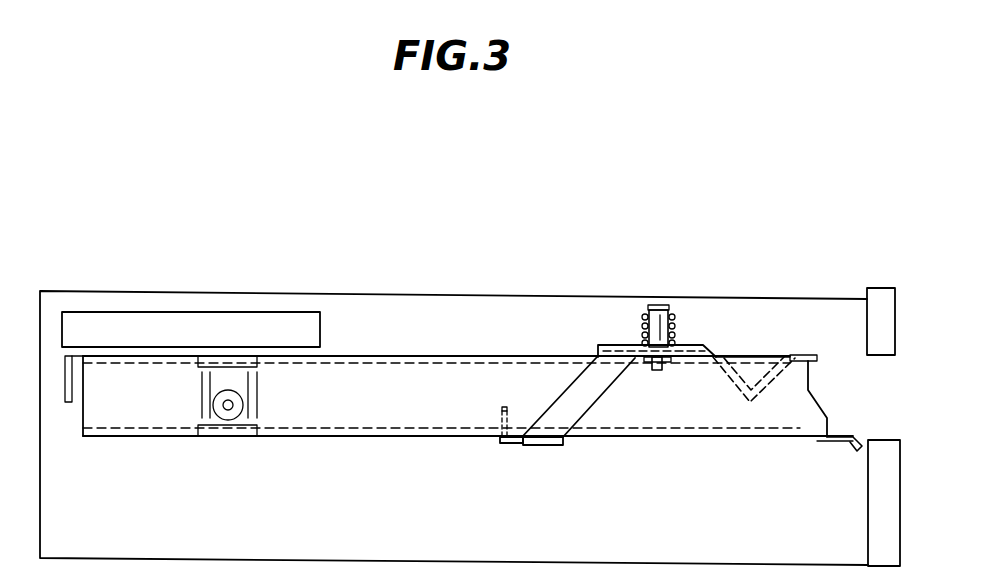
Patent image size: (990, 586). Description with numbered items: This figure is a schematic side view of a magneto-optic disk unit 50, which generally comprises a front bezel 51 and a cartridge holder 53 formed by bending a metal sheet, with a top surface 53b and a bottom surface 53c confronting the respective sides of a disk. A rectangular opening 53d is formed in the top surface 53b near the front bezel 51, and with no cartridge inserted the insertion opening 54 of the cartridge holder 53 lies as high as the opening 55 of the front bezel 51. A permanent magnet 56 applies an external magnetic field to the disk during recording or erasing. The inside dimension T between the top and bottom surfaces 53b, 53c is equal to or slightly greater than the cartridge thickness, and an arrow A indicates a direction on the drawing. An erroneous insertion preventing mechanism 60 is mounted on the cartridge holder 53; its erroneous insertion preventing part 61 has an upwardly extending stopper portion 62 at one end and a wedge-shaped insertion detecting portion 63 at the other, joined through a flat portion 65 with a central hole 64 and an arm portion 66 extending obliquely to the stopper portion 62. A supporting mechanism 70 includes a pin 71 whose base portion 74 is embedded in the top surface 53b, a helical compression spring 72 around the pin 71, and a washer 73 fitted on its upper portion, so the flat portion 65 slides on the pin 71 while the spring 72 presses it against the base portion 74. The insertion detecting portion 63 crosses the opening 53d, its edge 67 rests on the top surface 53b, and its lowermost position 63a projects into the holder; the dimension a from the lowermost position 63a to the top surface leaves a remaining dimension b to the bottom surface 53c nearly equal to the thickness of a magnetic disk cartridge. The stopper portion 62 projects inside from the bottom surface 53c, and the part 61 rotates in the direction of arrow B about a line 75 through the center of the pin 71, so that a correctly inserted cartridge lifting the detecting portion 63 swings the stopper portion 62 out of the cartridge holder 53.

The magneto-optic disk unit 50 is at (591, 121).
The front bezel 51 is at (895, 303).
The cartridge holder 53 is at (468, 368).
The top surface 53b is at (337, 355).
The bottom surface 53c is at (328, 440).
The rectangular opening 53d is at (718, 357).
The insertion opening 54 is at (863, 425).
The opening 55 is at (890, 398).
The permanent magnet 56 is at (222, 318).
The erroneous insertion preventing mechanism 60 is at (619, 364).
The erroneous insertion preventing part 61 is at (597, 347).
The stopper portion 62 is at (500, 408).
The insertion detecting portion 63 is at (774, 430).
The lowermost position 63a is at (752, 400).
The hole 64 is at (691, 304).
The flat portion 65 is at (628, 345).
The arm portion 66 is at (593, 395).
The edge 67 is at (797, 360).
The supporting mechanism 70 is at (700, 321).
The pin 71 is at (657, 305).
The helical compression spring 72 is at (678, 318).
The washer 73 is at (674, 318).
The base portion 74 is at (650, 360).
The line 75 is at (663, 365).
The inside dimension T is at (413, 366).
The direction A is at (553, 308).
The arrow B is at (785, 340).
The dimension a is at (753, 400).
The dimension b is at (799, 434).